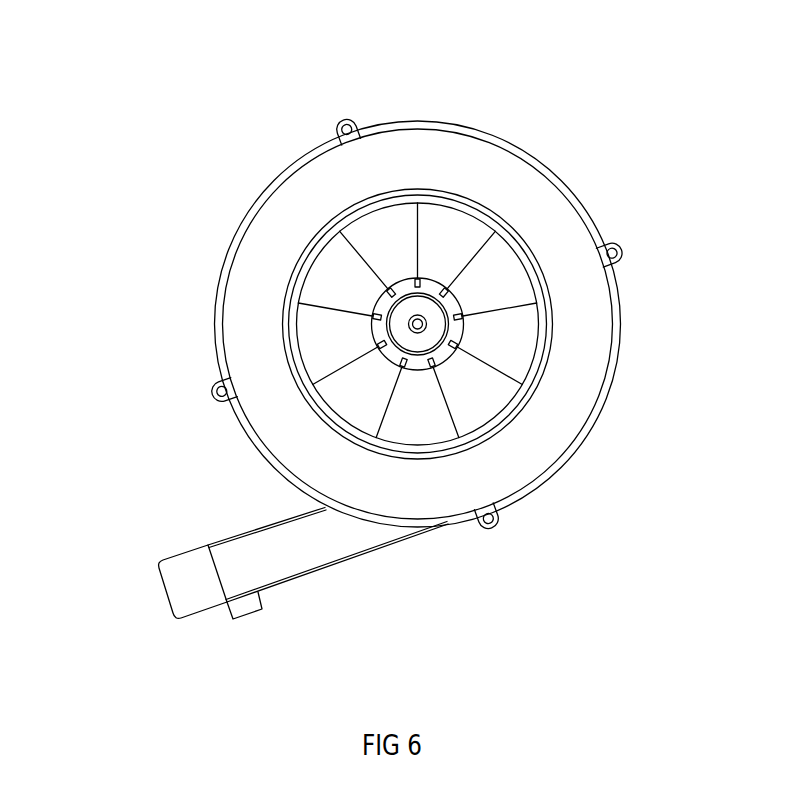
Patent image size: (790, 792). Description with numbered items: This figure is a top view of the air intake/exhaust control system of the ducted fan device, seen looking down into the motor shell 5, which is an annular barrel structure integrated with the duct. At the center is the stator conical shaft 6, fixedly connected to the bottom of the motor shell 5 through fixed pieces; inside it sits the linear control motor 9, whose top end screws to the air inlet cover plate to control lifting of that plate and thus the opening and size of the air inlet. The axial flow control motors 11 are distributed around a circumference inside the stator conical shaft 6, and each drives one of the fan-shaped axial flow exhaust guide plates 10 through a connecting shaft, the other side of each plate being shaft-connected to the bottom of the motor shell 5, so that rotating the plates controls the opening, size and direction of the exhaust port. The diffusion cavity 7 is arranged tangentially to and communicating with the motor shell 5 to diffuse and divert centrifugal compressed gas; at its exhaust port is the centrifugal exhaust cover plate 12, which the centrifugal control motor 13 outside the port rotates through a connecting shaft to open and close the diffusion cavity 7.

The motor shell 5 is at (610, 130).
The stator conical shaft 6 is at (108, 353).
The diffusion cavity 7 is at (188, 496).
The linear control motor 9 is at (173, 221).
The axial flow exhaust guide plate 10 is at (372, 52).
The axial flow control motor 11 is at (650, 343).
The centrifugal exhaust cover plate 12 is at (68, 537).
The centrifugal control motor 13 is at (368, 650).